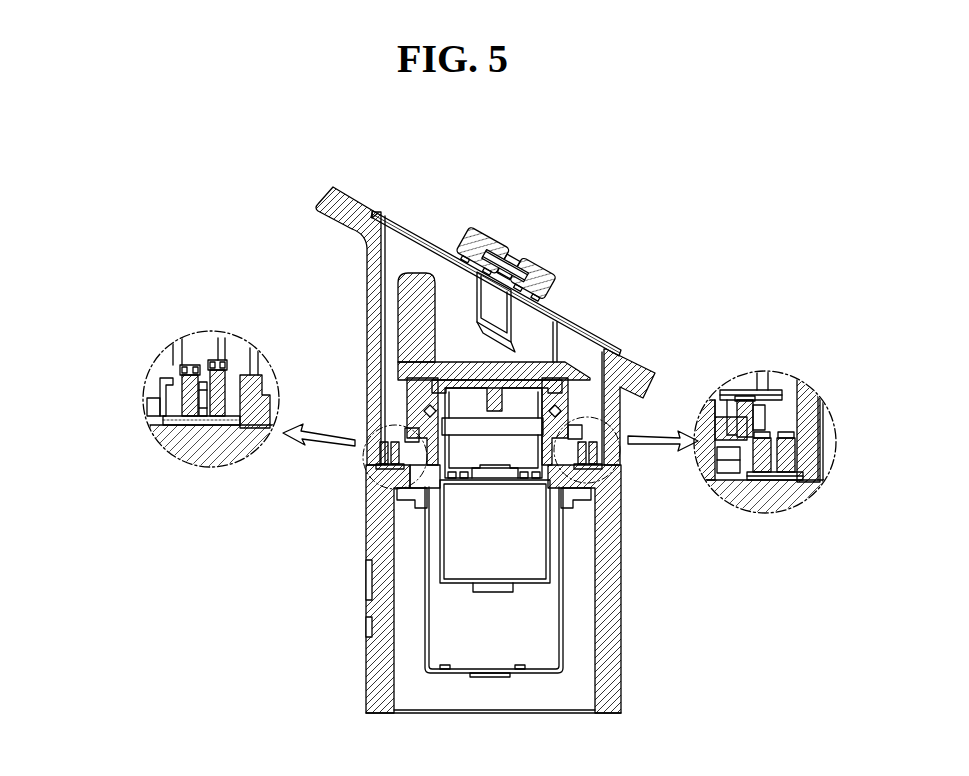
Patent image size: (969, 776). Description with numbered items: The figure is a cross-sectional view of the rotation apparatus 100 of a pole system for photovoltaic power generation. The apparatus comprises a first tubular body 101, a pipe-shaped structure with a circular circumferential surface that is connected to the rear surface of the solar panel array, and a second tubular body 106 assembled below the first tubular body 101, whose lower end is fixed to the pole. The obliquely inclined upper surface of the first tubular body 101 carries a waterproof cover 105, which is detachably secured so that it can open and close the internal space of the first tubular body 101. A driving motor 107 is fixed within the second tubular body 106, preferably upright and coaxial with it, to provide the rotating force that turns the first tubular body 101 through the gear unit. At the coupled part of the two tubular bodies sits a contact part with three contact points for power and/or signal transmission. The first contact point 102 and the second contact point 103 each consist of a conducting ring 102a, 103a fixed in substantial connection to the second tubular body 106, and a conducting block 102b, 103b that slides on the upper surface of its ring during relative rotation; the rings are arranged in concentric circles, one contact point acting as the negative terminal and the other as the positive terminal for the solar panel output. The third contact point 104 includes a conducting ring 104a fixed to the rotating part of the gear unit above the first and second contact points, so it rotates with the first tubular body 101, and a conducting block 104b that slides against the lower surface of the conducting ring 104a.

The rotation apparatus 100 is at (603, 294).
The first tubular body 101 is at (366, 272).
The first contact point 102 is at (322, 338).
The conducting ring 102a is at (231, 414).
The conducting block 102b is at (215, 388).
The second contact point 103 is at (77, 398).
The conducting ring 103a is at (186, 422).
The conducting block 103b is at (188, 394).
The third contact point 104 is at (850, 344).
The conducting ring 104a is at (744, 400).
The conducting block 104b is at (745, 417).
The waterproof cover 105 is at (400, 237).
The second tubular body 106 is at (375, 665).
The driving motor 107 is at (477, 513).